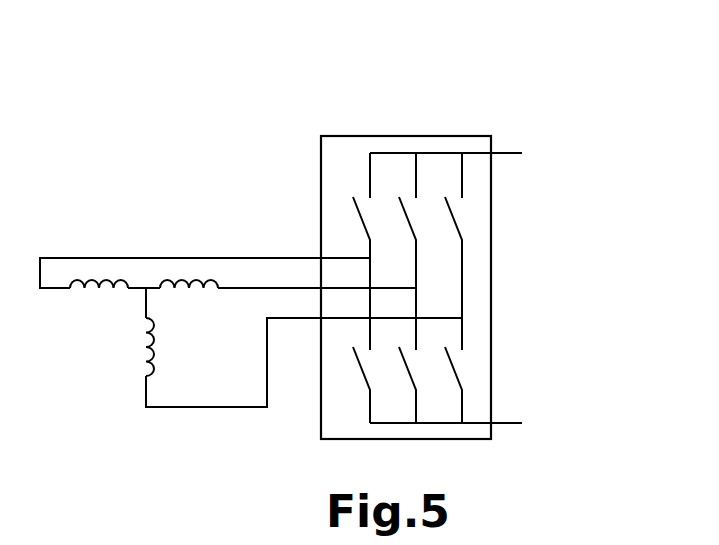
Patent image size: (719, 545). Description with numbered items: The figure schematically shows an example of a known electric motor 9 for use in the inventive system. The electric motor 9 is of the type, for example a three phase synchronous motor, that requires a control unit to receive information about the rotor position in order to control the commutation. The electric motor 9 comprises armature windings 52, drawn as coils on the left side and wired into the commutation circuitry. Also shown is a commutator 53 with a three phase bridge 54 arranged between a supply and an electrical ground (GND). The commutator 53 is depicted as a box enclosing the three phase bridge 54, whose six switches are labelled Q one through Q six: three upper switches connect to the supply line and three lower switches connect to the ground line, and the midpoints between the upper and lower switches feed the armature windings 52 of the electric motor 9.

The electric motor 9 is at (510, 93).
The armature windings 52 is at (150, 227).
The commutator 53 is at (343, 138).
The three phase bridge 54 is at (532, 287).